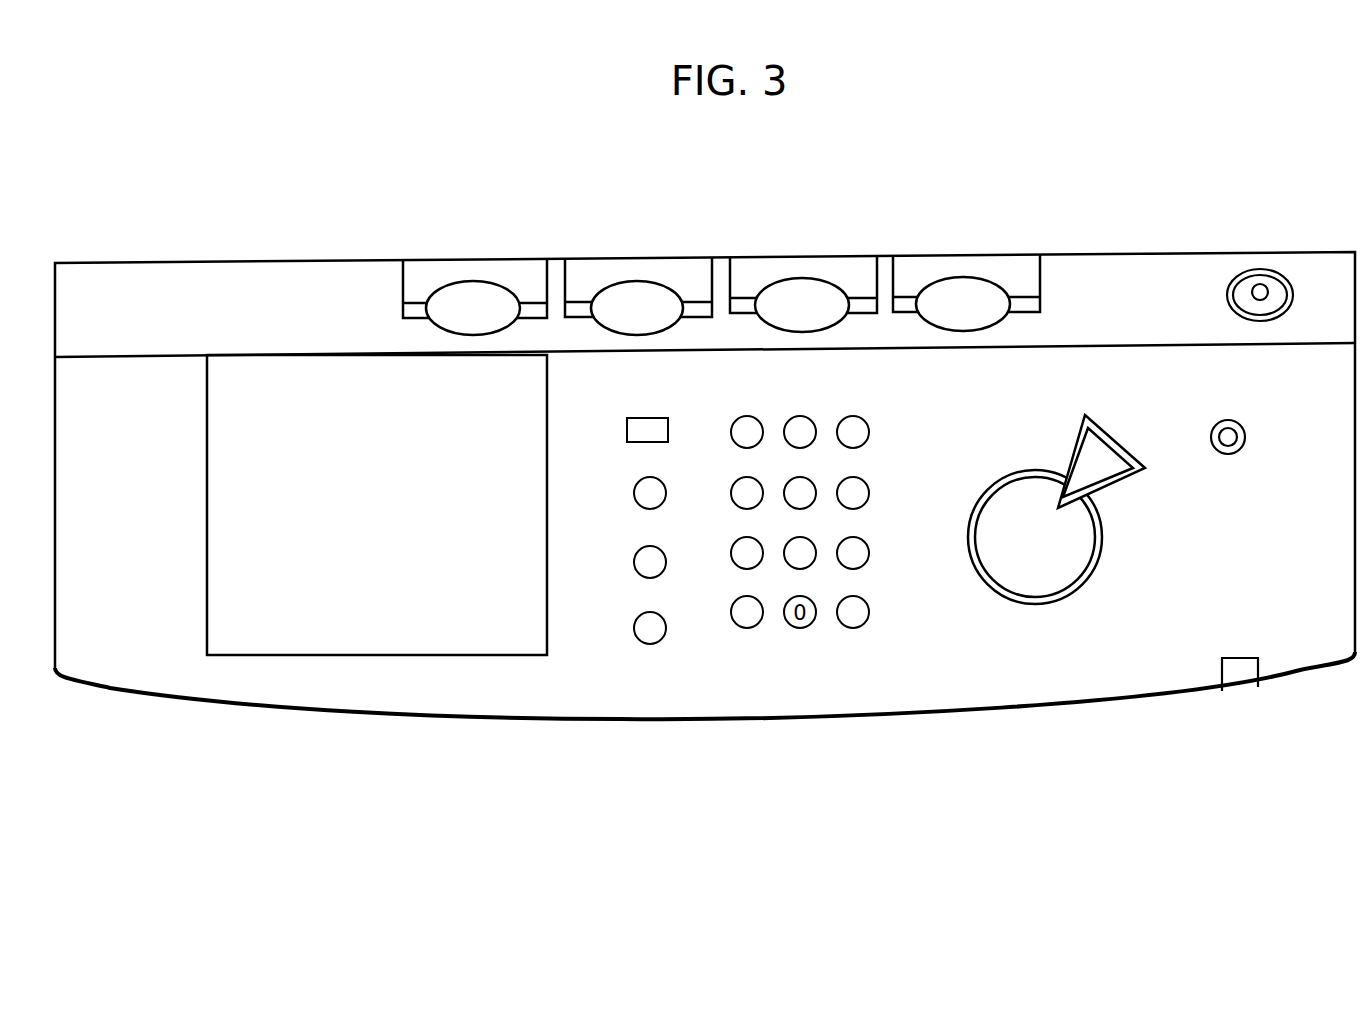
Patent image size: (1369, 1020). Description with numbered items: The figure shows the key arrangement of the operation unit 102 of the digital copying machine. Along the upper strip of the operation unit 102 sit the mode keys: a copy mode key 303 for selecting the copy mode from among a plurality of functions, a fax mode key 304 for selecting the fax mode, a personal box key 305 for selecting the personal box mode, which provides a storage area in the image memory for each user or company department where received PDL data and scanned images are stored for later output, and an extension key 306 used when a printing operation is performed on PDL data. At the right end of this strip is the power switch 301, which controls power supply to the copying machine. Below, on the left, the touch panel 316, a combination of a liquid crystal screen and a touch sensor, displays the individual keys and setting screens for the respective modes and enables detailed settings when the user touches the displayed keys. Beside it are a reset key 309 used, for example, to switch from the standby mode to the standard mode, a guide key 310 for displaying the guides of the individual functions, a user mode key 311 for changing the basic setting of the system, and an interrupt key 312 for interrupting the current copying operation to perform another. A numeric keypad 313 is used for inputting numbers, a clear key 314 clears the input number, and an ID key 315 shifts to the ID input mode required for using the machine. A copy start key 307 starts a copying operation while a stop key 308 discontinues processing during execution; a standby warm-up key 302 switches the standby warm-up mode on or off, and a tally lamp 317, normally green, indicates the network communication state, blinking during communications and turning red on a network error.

The operation unit 102 is at (240, 262).
The power switch 301 is at (1260, 284).
The standby warm-up key 302 is at (1246, 443).
The copy mode key 303 is at (478, 282).
The fax mode key 304 is at (641, 282).
The personal box key 305 is at (806, 279).
The extension key 306 is at (968, 277).
The copy start key 307 is at (1025, 604).
The stop key 308 is at (1112, 472).
The reset key 309 is at (627, 432).
The guide key 310 is at (634, 493).
The user mode key 311 is at (634, 562).
The interrupt key 312 is at (645, 644).
The numeric keypad 313 is at (884, 411).
The clear key 314 is at (850, 628).
The ID key 315 is at (745, 628).
The touch panel 316 is at (380, 656).
The tally lamp 317 is at (1243, 678).